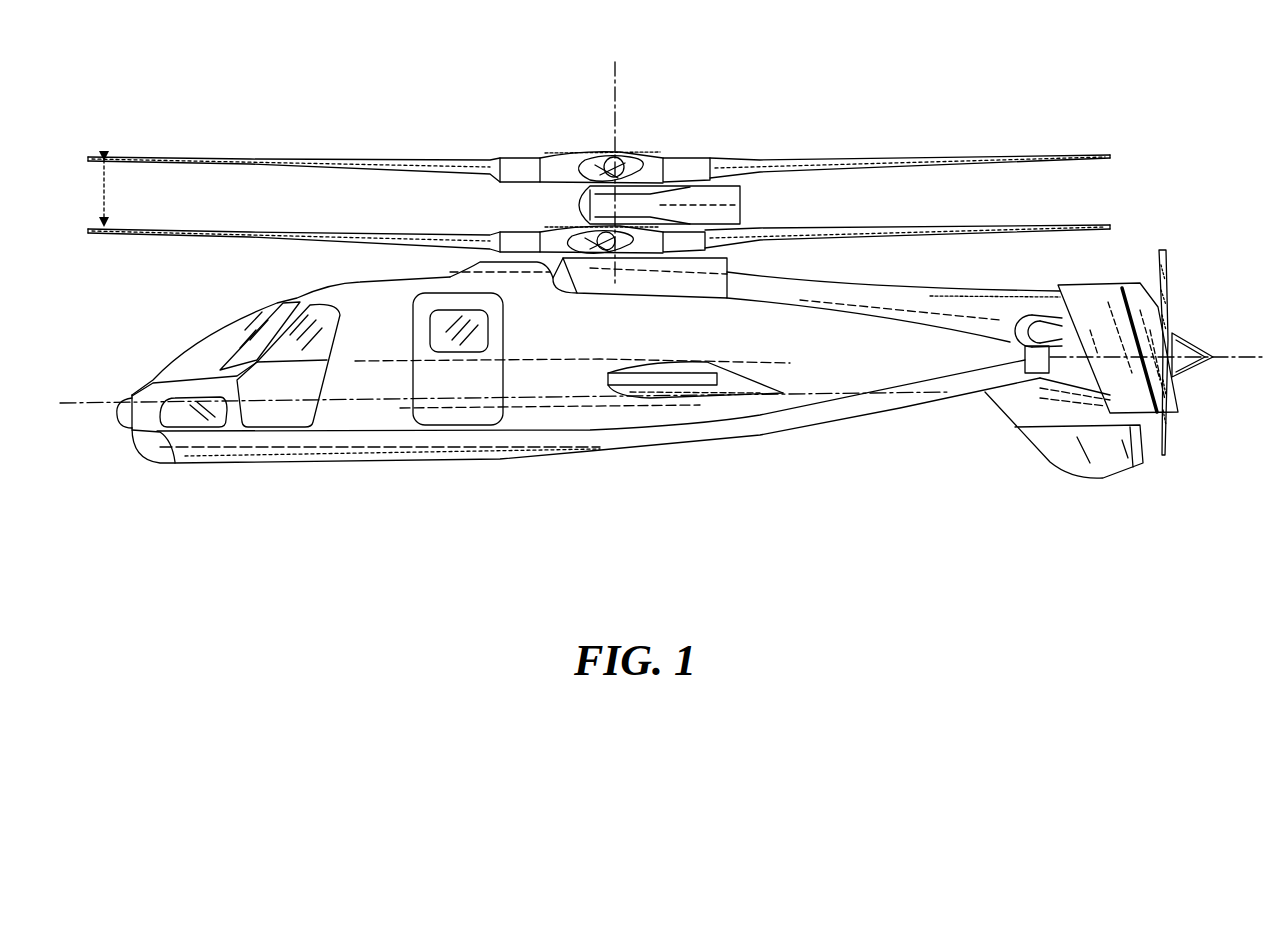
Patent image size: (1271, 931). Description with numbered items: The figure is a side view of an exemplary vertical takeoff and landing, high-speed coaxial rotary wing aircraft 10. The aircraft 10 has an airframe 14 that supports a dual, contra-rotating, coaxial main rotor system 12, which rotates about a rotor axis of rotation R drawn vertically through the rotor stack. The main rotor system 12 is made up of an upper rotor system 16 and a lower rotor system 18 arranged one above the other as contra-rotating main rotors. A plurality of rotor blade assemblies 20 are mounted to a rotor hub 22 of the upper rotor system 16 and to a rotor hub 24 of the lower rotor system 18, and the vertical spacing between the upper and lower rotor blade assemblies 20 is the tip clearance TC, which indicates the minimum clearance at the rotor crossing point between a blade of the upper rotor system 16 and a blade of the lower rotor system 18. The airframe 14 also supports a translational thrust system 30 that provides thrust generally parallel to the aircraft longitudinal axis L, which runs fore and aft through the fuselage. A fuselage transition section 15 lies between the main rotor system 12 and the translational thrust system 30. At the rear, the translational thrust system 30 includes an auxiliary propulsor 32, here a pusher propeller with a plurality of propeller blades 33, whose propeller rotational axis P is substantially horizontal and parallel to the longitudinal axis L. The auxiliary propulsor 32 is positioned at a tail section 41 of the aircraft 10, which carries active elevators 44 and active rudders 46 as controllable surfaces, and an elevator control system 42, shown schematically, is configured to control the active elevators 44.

The rotary wing aircraft 10 is at (237, 113).
The main rotor system 12 is at (683, 131).
The airframe 14 is at (150, 385).
The fuselage transition section 15 is at (585, 397).
The upper rotor system 16 is at (599, 144).
The lower rotor system 18 is at (588, 221).
The rotor blade assemblies 20 is at (934, 156).
The rotor hub 22 is at (598, 152).
The rotor hub 24 is at (566, 233).
The translational thrust system 30 is at (1156, 362).
The auxiliary propulsor 32 is at (1164, 455).
The propeller blades 33 is at (1166, 270).
The tail section 41 is at (1030, 485).
The elevator control system 42 is at (1024, 360).
The active elevators 44 is at (1051, 328).
The active rudders 46 is at (1123, 403).
The tip clearance TC is at (108, 190).
The rotor axis of rotation R is at (620, 82).
The aircraft longitudinal axis L is at (533, 400).
The propeller rotational axis P is at (1228, 359).